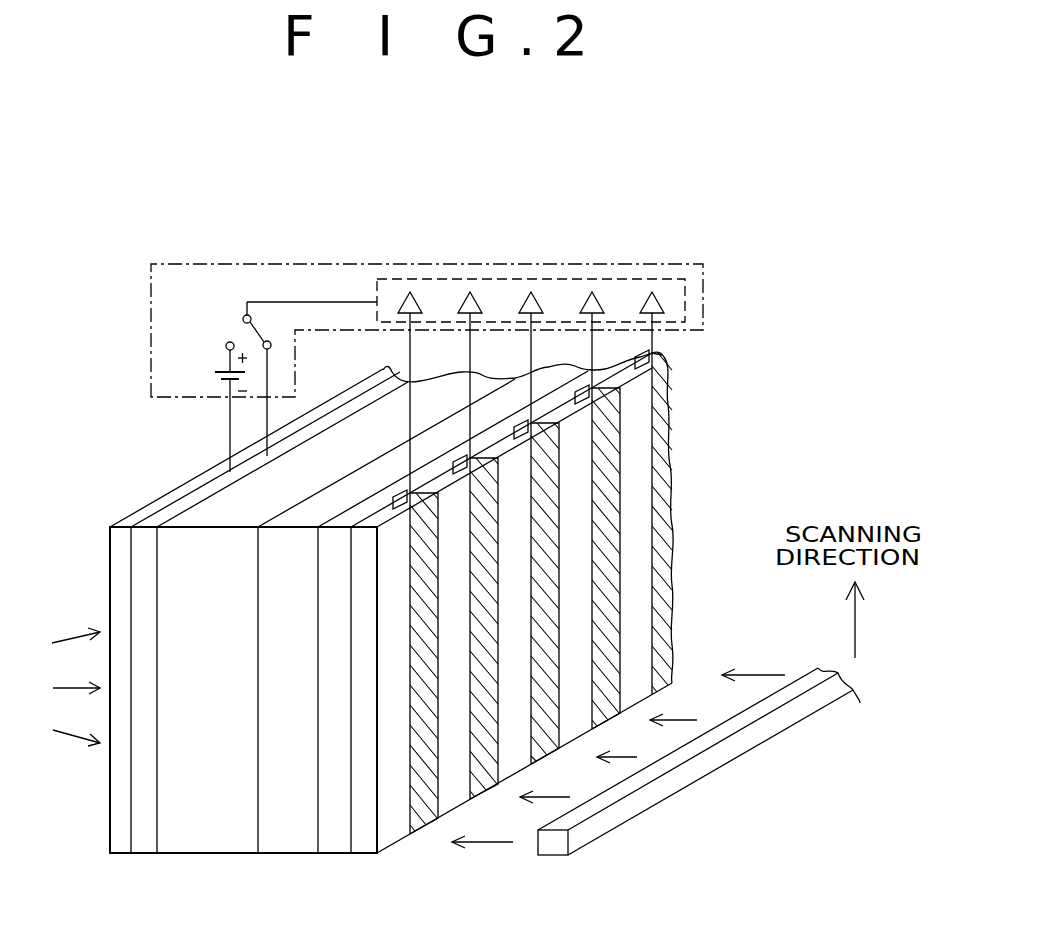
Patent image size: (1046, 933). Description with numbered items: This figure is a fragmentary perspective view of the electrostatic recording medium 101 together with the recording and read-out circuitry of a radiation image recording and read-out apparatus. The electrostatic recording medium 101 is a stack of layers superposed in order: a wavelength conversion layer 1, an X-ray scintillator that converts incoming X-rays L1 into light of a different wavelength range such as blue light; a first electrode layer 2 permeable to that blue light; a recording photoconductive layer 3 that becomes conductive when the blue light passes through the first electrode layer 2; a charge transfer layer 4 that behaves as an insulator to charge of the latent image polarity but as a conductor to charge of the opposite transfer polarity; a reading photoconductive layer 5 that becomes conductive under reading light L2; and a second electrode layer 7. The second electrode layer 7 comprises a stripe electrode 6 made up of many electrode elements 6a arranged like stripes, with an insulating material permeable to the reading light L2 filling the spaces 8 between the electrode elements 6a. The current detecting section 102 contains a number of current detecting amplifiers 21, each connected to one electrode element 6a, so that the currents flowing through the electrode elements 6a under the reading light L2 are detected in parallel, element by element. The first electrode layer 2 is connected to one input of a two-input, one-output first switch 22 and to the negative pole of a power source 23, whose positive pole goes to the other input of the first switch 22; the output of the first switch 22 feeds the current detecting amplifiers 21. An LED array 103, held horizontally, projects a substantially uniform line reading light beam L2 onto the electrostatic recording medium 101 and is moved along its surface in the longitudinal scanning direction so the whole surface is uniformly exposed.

The wavelength conversion layer 1 is at (122, 850).
The first electrode layer 2 is at (145, 850).
The recording photoconductive layer 3 is at (197, 850).
The charge transfer layer 4 is at (275, 850).
The reading photoconductive layer 5 is at (330, 850).
The stripe electrode 6 is at (529, 626).
The electrode element 6a is at (424, 820).
The second electrode layer 7 is at (363, 850).
The space 8 is at (452, 806).
The current detecting amplifier 21 is at (658, 303).
The first switch 22 is at (240, 326).
The power source 23 is at (214, 378).
The electrostatic recording medium 101 is at (138, 502).
The current detecting section 102 is at (704, 277).
The LED array 103 is at (630, 820).
The X-rays L1 is at (74, 638).
The reading light L2 is at (772, 675).